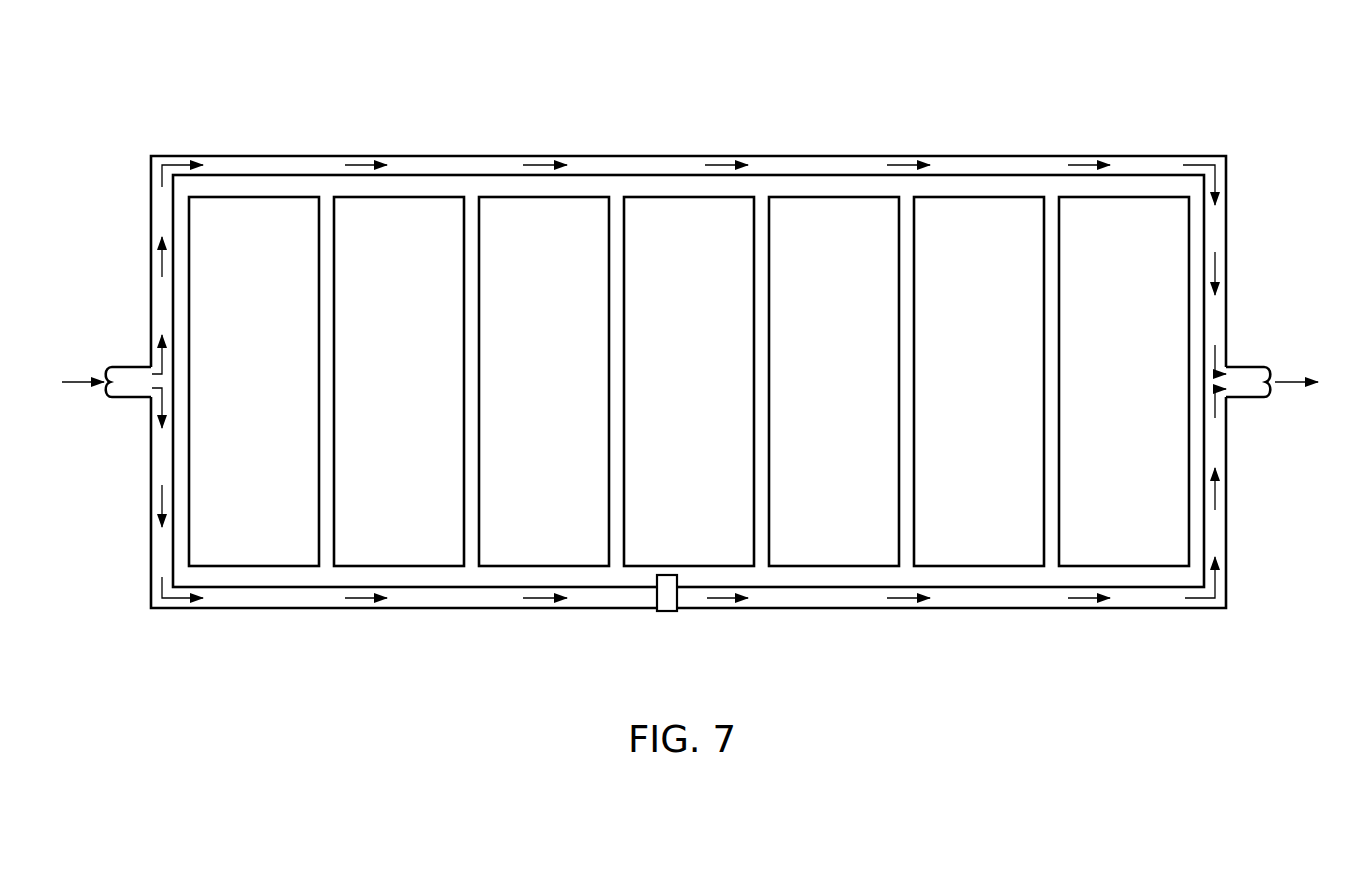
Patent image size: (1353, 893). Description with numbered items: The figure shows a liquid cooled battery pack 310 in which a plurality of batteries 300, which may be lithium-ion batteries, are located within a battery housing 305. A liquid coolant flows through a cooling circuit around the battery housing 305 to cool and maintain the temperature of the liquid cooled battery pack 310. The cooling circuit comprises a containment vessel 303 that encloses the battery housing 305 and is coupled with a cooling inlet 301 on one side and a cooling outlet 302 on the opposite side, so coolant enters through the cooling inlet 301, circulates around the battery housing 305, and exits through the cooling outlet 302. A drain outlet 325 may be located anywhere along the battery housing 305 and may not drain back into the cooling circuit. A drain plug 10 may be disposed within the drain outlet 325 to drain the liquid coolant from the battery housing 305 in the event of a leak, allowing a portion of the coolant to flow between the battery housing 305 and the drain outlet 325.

The drain plug 10 is at (695, 373).
The batteries 300 is at (430, 197).
The cooling inlet 301 is at (130, 367).
The cooling outlet 302 is at (1248, 367).
The containment vessel 303 is at (995, 155).
The battery housing 305 is at (800, 175).
The liquid cooled battery pack 310 is at (695, 350).
The drain outlet 325 is at (670, 613).